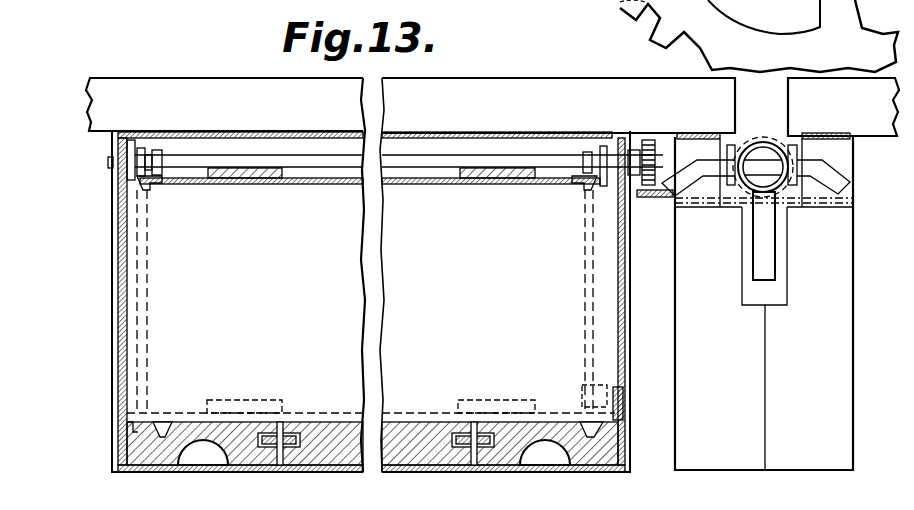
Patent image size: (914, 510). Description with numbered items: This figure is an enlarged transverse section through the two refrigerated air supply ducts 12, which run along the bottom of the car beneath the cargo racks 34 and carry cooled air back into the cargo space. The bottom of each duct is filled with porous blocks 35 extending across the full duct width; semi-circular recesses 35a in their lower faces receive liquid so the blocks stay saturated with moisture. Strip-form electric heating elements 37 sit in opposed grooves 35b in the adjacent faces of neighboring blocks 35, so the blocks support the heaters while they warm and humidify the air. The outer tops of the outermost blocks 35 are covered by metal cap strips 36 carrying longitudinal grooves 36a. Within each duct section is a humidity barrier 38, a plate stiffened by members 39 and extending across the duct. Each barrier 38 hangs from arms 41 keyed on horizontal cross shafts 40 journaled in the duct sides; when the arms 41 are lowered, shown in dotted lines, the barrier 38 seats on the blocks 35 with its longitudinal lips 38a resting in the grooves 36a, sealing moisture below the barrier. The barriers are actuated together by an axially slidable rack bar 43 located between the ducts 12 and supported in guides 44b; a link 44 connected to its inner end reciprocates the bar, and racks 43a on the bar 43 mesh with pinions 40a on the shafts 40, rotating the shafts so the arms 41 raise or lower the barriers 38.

The refrigerated air supply duct 12 is at (180, 258).
The cargo rack 34 is at (166, 97).
The porous block 35 is at (482, 382).
The semi-circular recess 35a is at (197, 440).
The groove 35b is at (300, 440).
The cap strip 36 is at (133, 430).
The longitudinal groove 36a is at (152, 437).
The electric heating element 37 is at (263, 437).
The humidity barrier 38 is at (412, 185).
The longitudinal lip 38a is at (165, 191).
The stiffening member 39 is at (270, 183).
The cross shaft 40 is at (307, 155).
The pinion 40a is at (655, 148).
The arm 41 is at (150, 149).
The rack bar 43 is at (760, 142).
The rack 43a is at (653, 203).
The link 44 is at (772, 281).
The guide 44b is at (810, 192).